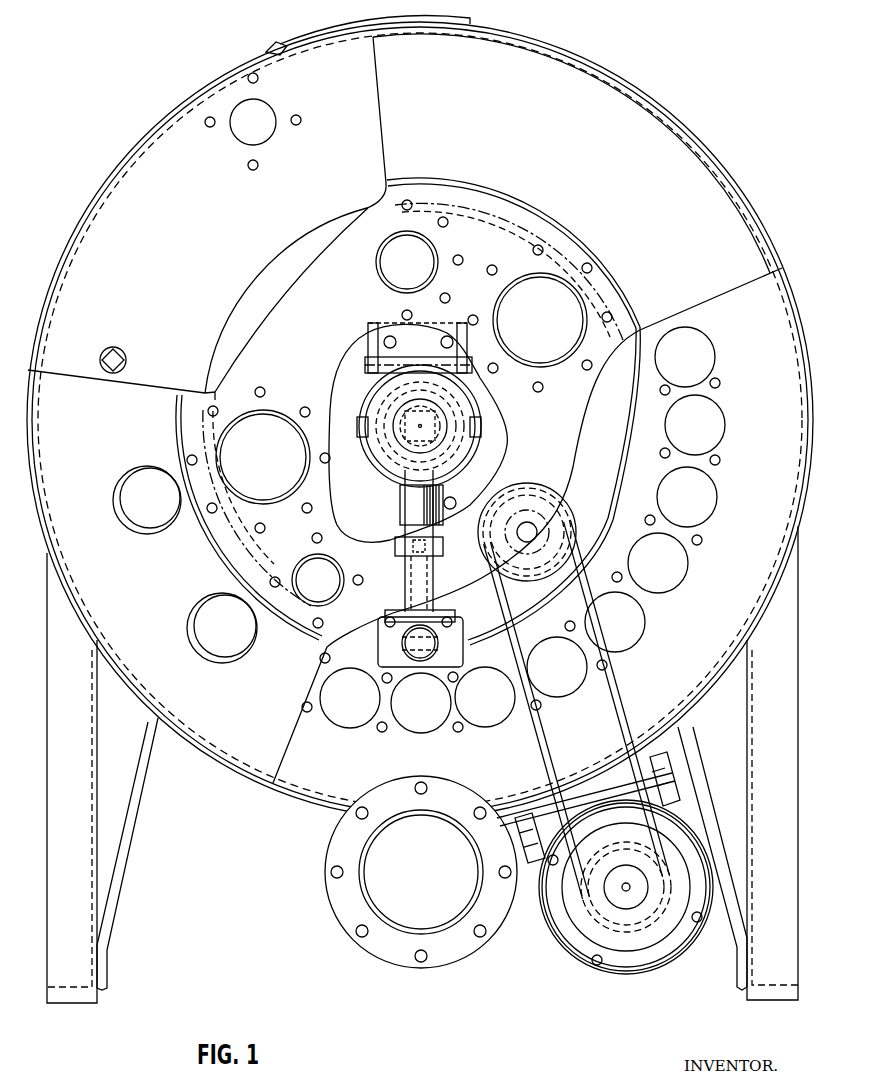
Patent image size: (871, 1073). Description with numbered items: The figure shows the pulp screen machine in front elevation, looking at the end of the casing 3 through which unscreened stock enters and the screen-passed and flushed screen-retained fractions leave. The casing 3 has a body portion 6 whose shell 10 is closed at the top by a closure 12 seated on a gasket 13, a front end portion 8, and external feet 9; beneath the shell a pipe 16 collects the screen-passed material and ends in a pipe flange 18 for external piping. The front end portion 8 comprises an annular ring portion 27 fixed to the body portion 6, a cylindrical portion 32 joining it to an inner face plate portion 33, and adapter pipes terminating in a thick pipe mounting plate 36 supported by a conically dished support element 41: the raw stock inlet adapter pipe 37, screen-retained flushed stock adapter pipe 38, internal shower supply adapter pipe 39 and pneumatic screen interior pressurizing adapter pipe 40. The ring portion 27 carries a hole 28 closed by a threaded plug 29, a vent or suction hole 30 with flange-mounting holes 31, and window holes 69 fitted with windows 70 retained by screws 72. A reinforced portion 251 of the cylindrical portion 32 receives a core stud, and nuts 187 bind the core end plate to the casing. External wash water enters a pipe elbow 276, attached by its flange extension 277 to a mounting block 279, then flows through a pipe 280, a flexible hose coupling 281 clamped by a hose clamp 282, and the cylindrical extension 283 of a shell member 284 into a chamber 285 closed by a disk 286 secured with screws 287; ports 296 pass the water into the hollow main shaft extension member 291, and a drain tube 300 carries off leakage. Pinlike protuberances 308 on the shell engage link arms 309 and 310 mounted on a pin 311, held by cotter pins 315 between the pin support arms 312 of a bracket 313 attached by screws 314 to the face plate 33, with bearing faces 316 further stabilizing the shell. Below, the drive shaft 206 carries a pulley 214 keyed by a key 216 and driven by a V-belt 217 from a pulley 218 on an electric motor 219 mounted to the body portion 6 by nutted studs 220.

The casing 3 is at (154, 120).
The body portion 6 is at (605, 66).
The front end portion 8 is at (136, 168).
The external feet 9 is at (130, 858).
The shell 10 is at (680, 118).
The closure 12 is at (305, 35).
The gasket 13 is at (270, 44).
The pipe 16 is at (340, 857).
The pipe flange 18 is at (333, 900).
The annular ring portion 27 is at (405, 410).
The hole 28 is at (128, 356).
The threaded plug 29 is at (123, 368).
The hole 30 is at (275, 110).
The holes 31 is at (248, 164).
The cylindrical portion 32 is at (262, 270).
The inner face plate portion 33 is at (412, 343).
The pipe mounting plate 36 is at (270, 327).
The raw stock inlet adapter pipe 37 is at (518, 292).
The screen-retained flushed stock adapter pipe 38 is at (285, 434).
The internal shower supply adapter pipe 39 is at (412, 288).
The pneumatic screen interior pressurizing adapter pipe 40 is at (336, 574).
The conically dished support element 41 is at (441, 326).
The window holes 69 is at (715, 343).
The windows 70 is at (522, 530).
The screws 72 is at (720, 385).
The nuts 187 is at (472, 450).
The drive shaft 206 is at (520, 532).
The pulley 214 is at (578, 513).
The key 216 is at (530, 522).
The V-belt 217 is at (630, 705).
The pulley 218 is at (590, 930).
The electric motor 219 is at (598, 970).
The nutted studs 220 is at (665, 800).
The reinforced portion 251 is at (368, 210).
The pipe elbow 276 is at (415, 648).
The flange extension 277 is at (450, 615).
The mounting block 279 is at (392, 520).
The pipe 280 is at (405, 585).
The flexible hose coupling 281 is at (395, 545).
The hose clamp 282 is at (400, 555).
The cylindrical extension 283 is at (443, 490).
The shell member 284 is at (383, 465).
The chamber 285 is at (462, 470).
The disk 286 is at (392, 475).
The screws 287 is at (541, 386).
The hollow main shaft extension member 291 is at (354, 456).
The ports 296 is at (418, 450).
The drain tube 300 is at (398, 497).
The pinlike protuberances 308 is at (352, 420).
The link arm 309 is at (360, 400).
The link arm 310 is at (466, 398).
The pin 311 is at (370, 360).
The pin support arms 312 is at (370, 325).
The bracket 313 is at (390, 322).
The screws 314 is at (441, 343).
The cotter pins 315 is at (368, 355).
The bearing faces 316 is at (357, 440).